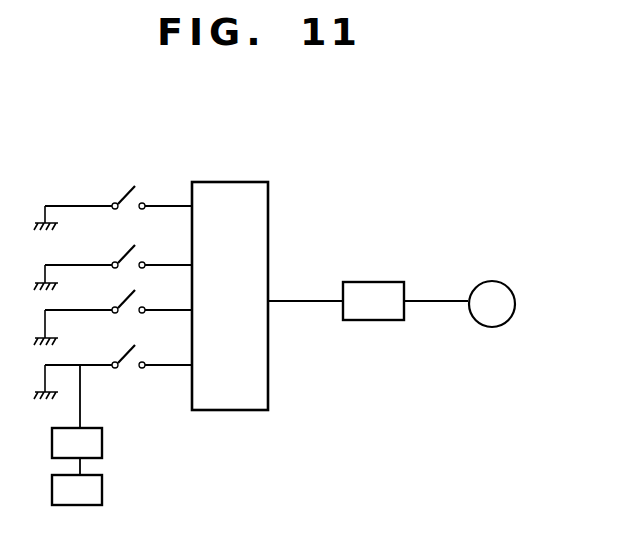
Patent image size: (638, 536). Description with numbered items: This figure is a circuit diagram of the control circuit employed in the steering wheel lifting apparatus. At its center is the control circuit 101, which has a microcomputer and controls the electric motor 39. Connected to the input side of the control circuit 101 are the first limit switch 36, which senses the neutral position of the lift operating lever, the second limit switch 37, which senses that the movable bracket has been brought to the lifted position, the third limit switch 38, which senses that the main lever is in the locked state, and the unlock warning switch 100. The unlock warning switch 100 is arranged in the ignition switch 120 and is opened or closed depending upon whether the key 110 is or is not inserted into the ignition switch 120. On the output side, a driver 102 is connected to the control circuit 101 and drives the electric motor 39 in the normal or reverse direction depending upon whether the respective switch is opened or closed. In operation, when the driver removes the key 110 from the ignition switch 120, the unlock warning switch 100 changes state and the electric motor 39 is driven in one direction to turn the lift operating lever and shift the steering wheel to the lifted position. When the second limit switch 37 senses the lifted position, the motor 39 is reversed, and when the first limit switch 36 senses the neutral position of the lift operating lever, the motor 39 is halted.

The first limit switch 36 is at (131, 186).
The second limit switch 37 is at (128, 252).
The third limit switch 38 is at (128, 298).
The unlock warning switch 100 is at (118, 368).
The control circuit 101 is at (231, 182).
The driver 102 is at (379, 282).
The electric motor 39 is at (493, 281).
The ignition switch 120 is at (77, 411).
The key 110 is at (77, 481).